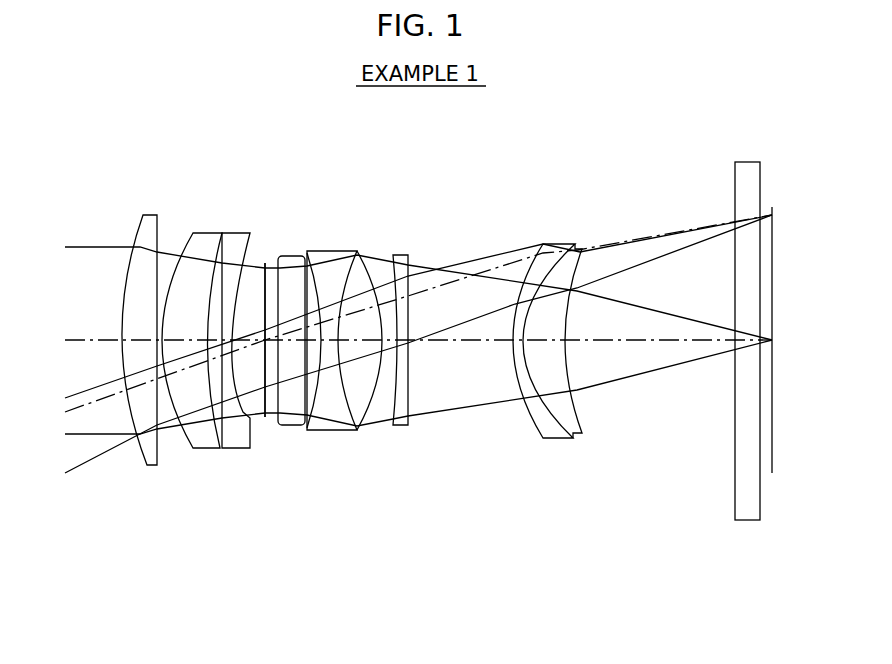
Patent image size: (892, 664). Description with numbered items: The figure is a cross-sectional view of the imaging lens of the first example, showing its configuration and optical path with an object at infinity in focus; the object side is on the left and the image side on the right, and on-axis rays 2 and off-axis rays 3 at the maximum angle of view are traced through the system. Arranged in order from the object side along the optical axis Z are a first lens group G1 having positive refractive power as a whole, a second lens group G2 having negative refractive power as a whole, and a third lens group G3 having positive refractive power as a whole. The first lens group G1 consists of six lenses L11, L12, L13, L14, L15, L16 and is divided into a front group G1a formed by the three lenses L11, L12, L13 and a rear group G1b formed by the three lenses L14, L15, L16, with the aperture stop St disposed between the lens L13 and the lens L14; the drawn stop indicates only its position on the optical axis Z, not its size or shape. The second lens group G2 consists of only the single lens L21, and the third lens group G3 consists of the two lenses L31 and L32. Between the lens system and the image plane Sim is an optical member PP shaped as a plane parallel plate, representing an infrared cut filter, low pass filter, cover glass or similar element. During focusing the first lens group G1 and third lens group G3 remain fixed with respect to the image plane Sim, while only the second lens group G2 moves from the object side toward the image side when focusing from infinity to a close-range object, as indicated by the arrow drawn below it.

The lens L11 is at (153, 215).
The lens L12 is at (205, 233).
The lens L13 is at (240, 233).
The lens L14 is at (293, 256).
The lens L15 is at (333, 251).
The lens L16 is at (357, 251).
The lens L21 is at (403, 255).
The lens L31 is at (555, 246).
The lens L32 is at (578, 249).
The aperture stop St is at (263, 263).
The optical member PP is at (748, 168).
The image plane Sim is at (772, 474).
The optical axis Z is at (92, 338).
The on-axis rays 2 is at (672, 365).
The off-axis rays 3 is at (672, 229).
The first lens group G1 is at (256, 368).
The front group G1a is at (192, 336).
The rear group G1b is at (332, 336).
The second lens group G2 is at (420, 397).
The third lens group G3 is at (553, 368).